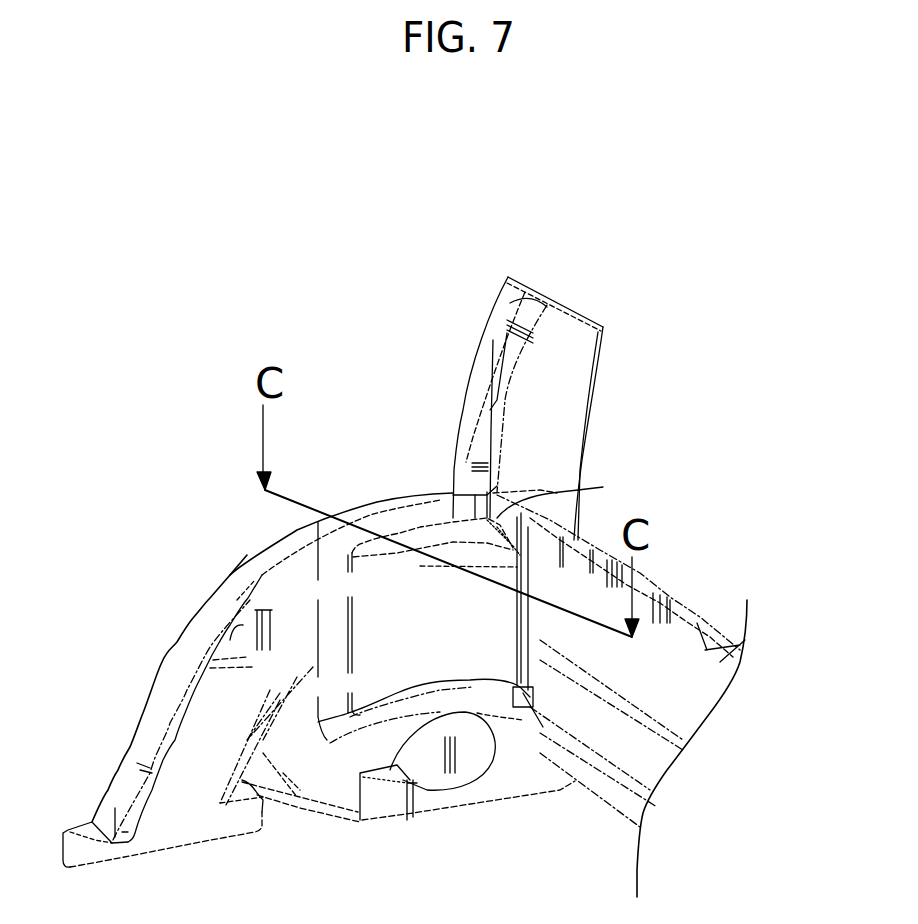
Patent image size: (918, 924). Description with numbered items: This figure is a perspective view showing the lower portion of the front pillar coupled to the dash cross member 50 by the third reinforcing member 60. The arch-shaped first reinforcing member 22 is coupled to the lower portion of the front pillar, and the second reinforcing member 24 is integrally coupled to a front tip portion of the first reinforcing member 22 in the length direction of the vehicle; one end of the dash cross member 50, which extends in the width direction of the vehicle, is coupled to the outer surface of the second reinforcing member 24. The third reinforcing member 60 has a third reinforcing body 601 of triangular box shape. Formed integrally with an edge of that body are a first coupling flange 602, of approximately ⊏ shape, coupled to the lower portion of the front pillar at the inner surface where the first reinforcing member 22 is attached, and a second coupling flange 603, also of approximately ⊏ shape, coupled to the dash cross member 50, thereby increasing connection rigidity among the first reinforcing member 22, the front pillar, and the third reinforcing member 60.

The first reinforcing member 22 is at (182, 745).
The second reinforcing member 24 is at (582, 345).
The dash cross member 50 is at (682, 617).
The third reinforcing member 60 is at (400, 725).
The third reinforcing body 601 is at (390, 607).
The first coupling flange 602 is at (390, 518).
The second coupling flange 603 is at (530, 582).